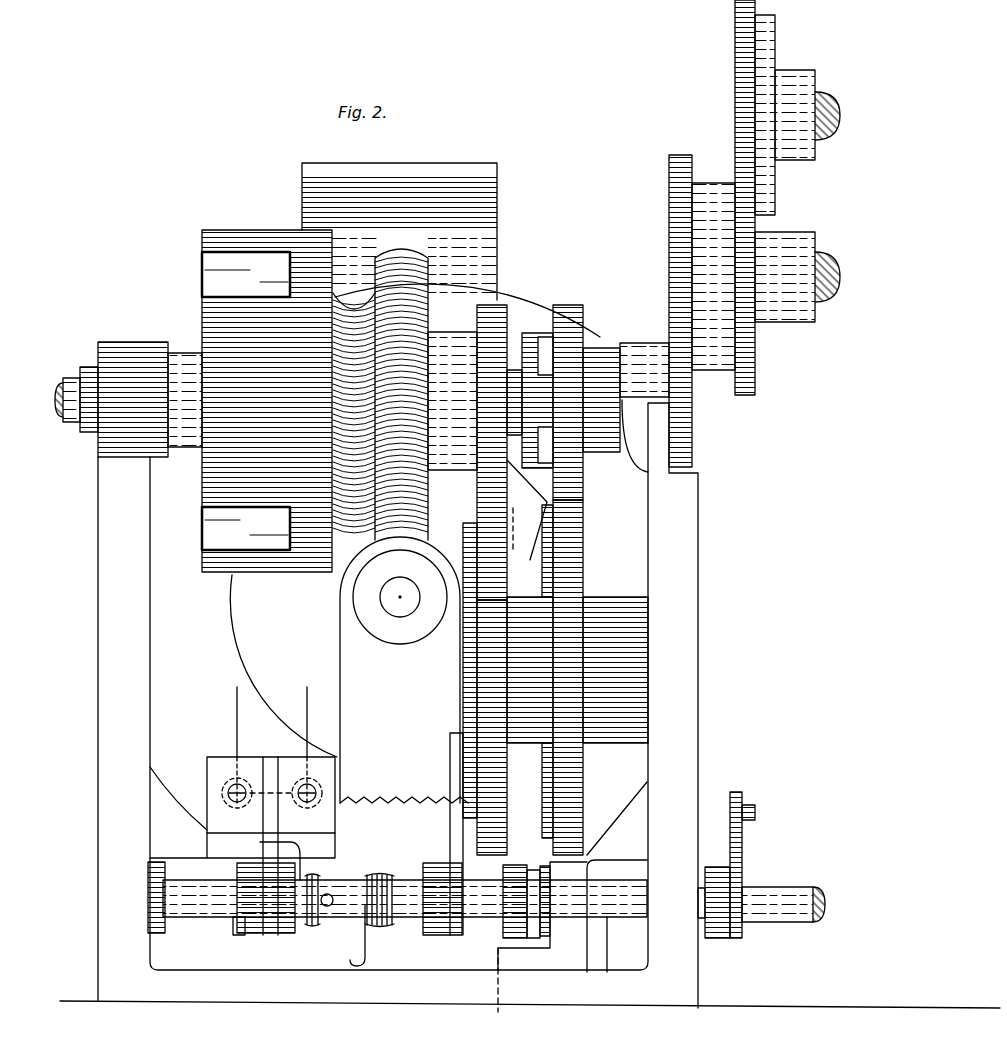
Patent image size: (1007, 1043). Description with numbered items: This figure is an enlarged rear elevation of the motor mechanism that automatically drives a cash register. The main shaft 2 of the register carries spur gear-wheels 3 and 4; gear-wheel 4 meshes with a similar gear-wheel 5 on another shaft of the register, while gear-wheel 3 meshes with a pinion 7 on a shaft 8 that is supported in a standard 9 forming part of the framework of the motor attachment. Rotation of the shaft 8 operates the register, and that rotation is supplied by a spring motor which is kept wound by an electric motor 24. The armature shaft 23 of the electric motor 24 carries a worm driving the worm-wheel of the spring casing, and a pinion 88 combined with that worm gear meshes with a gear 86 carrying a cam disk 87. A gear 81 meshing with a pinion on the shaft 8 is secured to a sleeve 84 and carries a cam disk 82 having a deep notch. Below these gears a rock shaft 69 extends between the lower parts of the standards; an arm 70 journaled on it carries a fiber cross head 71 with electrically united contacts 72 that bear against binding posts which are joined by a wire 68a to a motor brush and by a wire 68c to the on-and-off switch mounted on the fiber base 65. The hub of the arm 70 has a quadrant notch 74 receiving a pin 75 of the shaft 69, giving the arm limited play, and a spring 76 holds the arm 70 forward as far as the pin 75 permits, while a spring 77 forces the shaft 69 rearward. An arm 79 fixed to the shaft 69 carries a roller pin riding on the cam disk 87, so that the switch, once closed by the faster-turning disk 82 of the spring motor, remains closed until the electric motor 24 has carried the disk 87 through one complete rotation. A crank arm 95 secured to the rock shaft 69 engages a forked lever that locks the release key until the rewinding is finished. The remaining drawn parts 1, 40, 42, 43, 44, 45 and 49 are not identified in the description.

The base line 1 is at (498, 1014).
The main shaft 2 is at (822, 252).
The spur gear-wheel 3 is at (669, 252).
The spur gear-wheel 4 is at (745, 395).
The gear-wheel 5 is at (735, 84).
The pinion 7 is at (706, 452).
The shaft 8 is at (76, 426).
The standard 9 is at (530, 646).
The armature shaft 23 is at (392, 600).
The electric motor 24 is at (428, 270).
The gear 40 is at (120, 342).
The arm 42 is at (404, 670).
The gear 43 is at (583, 322).
The clutch member 44 is at (546, 350).
The clutch collar 45 is at (528, 345).
The drum gear 49 is at (252, 224).
The fiber base 65 is at (393, 168).
The wire 68a is at (237, 731).
The wire 68c is at (307, 694).
The rock shaft 69 is at (414, 917).
The arm 70 is at (260, 845).
The fiber cross head 71 is at (207, 768).
The contacts 72 is at (300, 805).
The quadrant notch 74 is at (225, 920).
The pin 75 is at (243, 928).
The spring 76 is at (95, 440).
The spring 77 is at (375, 880).
The arm 79 is at (450, 821).
The gear 81 is at (530, 670).
The cam disk 82 is at (548, 503).
The sleeve 84 is at (580, 576).
The gear 86 is at (485, 688).
The cam disk 87 is at (470, 652).
The pinion 88 is at (477, 318).
The crank arm 95 is at (736, 845).